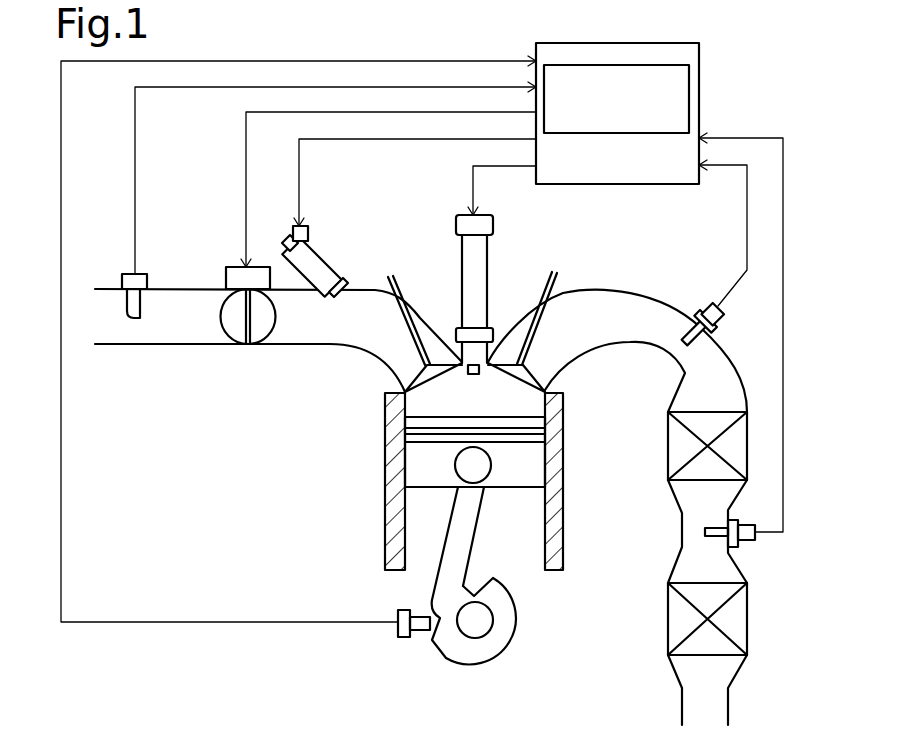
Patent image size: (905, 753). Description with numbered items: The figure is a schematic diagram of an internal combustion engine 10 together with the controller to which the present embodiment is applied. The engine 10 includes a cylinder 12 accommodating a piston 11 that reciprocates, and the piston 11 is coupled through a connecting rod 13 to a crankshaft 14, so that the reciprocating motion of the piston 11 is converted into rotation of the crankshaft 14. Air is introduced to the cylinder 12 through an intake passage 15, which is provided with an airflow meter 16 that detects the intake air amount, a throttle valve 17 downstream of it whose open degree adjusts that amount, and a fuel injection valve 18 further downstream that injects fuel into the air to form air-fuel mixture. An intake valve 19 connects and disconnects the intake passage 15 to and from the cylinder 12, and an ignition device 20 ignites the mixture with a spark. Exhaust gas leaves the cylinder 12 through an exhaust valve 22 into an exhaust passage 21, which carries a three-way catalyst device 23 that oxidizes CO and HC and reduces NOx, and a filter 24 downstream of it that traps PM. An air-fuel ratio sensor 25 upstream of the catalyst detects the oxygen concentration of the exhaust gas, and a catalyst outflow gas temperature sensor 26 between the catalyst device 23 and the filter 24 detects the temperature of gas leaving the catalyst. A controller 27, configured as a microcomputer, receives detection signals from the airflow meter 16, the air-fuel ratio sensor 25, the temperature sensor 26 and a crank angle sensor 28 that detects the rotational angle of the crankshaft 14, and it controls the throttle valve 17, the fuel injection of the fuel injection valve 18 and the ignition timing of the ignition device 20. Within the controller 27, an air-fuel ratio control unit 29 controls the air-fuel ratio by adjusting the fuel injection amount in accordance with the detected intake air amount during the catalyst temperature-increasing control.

The internal combustion engine 10 is at (197, 518).
The piston 11 is at (428, 478).
The cylinder 12 is at (545, 550).
The connecting rod 13 is at (466, 526).
The crankshaft 14 is at (473, 628).
The intake passage 15 is at (150, 345).
The airflow meter 16 is at (122, 270).
The throttle valve 17 is at (225, 317).
The fuel injection valve 18 is at (320, 259).
The intake valve 19 is at (405, 333).
The ignition device 20 is at (462, 266).
The exhaust passage 21 is at (614, 345).
The exhaust valve 22 is at (540, 332).
The three-way catalyst device 23 is at (672, 445).
The filter 24 is at (672, 619).
The air-fuel ratio sensor 25 is at (698, 305).
The catalyst outflow gas temperature sensor 26 is at (745, 545).
The controller 27 is at (648, 114).
The crank angle sensor 28 is at (400, 608).
The air-fuel ratio control unit 29 is at (660, 133).